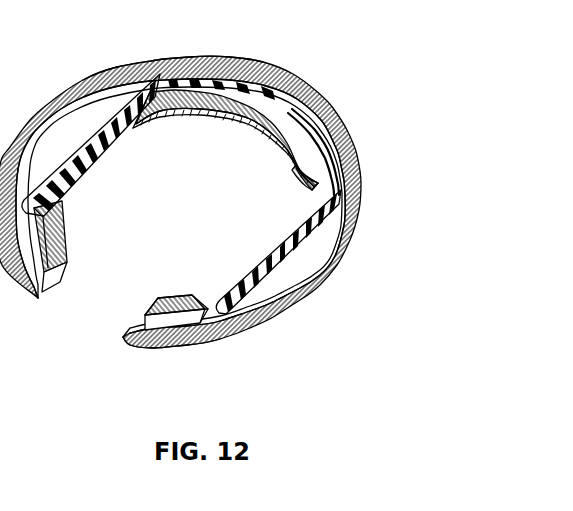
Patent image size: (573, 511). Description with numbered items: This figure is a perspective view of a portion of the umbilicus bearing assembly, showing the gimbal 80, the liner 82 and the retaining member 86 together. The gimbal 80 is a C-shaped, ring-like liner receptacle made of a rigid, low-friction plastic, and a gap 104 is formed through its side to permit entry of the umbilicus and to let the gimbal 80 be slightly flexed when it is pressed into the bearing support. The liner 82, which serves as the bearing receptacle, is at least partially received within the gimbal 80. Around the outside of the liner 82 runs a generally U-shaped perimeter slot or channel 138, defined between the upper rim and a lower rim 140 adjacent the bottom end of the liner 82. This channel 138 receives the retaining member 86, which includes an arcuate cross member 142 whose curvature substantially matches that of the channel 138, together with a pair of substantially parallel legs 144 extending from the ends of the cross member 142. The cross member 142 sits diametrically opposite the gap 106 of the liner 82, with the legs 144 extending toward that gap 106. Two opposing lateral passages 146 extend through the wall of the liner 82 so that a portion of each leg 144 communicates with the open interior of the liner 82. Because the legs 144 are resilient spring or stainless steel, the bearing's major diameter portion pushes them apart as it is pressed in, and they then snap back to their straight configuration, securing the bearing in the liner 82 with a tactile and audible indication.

The gimbal 80 is at (296, 299).
The liner 82 is at (195, 105).
The retaining member 86 is at (170, 68).
The gap 104 is at (138, 338).
The gap of the liner 106 is at (178, 307).
The channel 138 is at (349, 191).
The lower rim 140 is at (44, 290).
The cross member 142 is at (213, 80).
The legs 144 is at (100, 130).
The lateral passages 146 is at (58, 203).